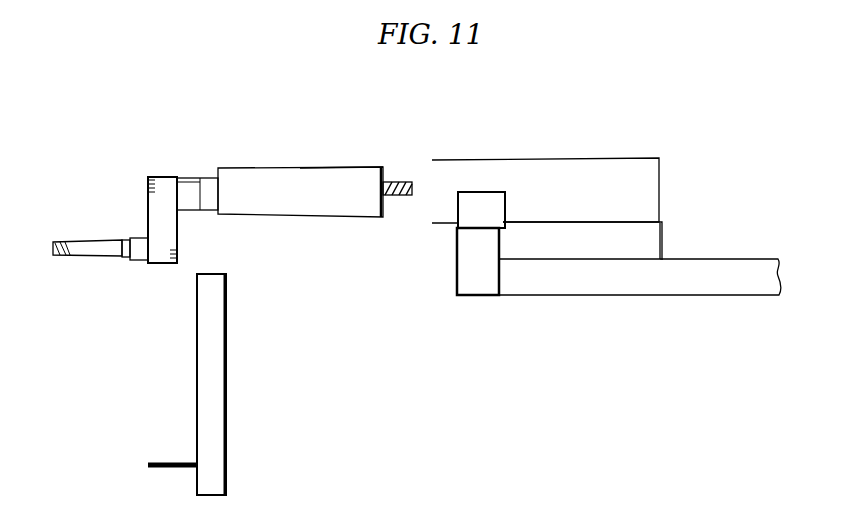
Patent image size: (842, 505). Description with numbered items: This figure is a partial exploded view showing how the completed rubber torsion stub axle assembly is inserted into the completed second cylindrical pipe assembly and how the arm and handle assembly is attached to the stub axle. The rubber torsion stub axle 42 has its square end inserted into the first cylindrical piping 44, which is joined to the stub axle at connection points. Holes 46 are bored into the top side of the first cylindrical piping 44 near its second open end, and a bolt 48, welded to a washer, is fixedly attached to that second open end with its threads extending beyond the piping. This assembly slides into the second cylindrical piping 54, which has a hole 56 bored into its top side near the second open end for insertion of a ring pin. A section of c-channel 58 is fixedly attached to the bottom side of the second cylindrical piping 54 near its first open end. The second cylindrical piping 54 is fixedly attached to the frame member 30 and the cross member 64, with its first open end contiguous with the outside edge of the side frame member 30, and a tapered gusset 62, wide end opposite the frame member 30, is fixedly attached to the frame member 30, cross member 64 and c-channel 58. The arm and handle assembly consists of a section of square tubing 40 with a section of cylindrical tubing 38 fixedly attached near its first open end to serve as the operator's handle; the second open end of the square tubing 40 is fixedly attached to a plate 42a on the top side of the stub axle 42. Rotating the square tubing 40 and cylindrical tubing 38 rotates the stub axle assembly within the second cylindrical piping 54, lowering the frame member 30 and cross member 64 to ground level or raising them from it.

The frame member 30 is at (482, 276).
The cylindrical tubing 38 is at (165, 470).
The square tubing 40 is at (207, 295).
The rubber torsion stub axle 42 is at (163, 208).
The plate 42a is at (200, 177).
The first cylindrical piping 44 is at (297, 197).
The holes 46 is at (357, 170).
The bolt 48 is at (410, 181).
The second cylindrical piping 54 is at (563, 202).
The hole 56 is at (620, 160).
The c-channel 58 is at (483, 215).
The tapered gusset 62 is at (645, 243).
The cross member 64 is at (637, 278).